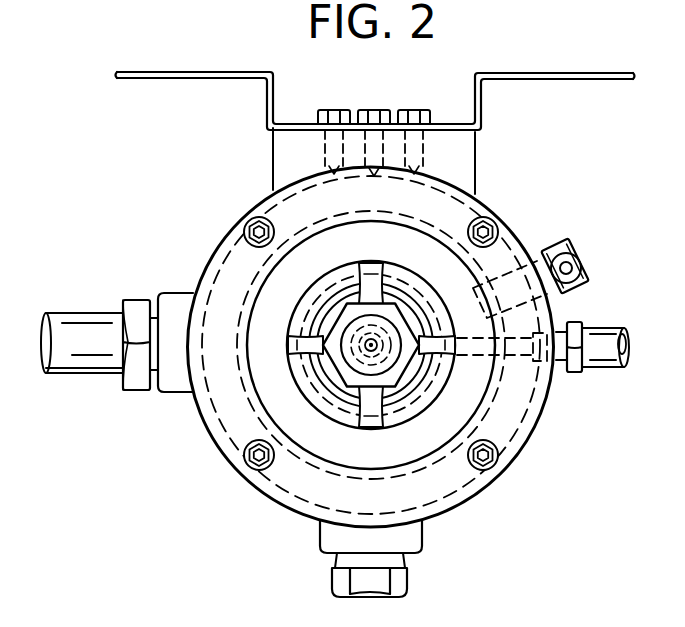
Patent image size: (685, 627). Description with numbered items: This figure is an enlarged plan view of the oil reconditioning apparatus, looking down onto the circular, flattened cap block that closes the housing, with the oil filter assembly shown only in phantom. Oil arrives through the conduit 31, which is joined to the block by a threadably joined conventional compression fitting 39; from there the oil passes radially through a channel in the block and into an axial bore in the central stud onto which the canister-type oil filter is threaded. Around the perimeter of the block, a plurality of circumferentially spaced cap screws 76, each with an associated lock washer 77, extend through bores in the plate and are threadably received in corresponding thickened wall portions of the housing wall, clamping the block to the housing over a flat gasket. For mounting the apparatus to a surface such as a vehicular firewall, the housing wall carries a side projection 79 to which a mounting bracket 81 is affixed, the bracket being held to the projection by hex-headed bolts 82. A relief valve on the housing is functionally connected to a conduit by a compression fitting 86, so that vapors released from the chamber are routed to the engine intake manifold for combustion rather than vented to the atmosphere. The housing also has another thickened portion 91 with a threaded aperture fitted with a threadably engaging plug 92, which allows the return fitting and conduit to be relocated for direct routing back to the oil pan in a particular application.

The conduit 31 is at (606, 345).
The compression fitting 39 is at (572, 320).
The cap screw 76 is at (503, 231).
The lock washer 77 is at (491, 222).
The side projection 79 is at (287, 155).
The mounting bracket 81 is at (277, 102).
The hex-headed bolts 82 is at (372, 108).
The compression fitting 86 is at (558, 246).
The thickened portion 91 is at (422, 530).
The plug 92 is at (407, 578).